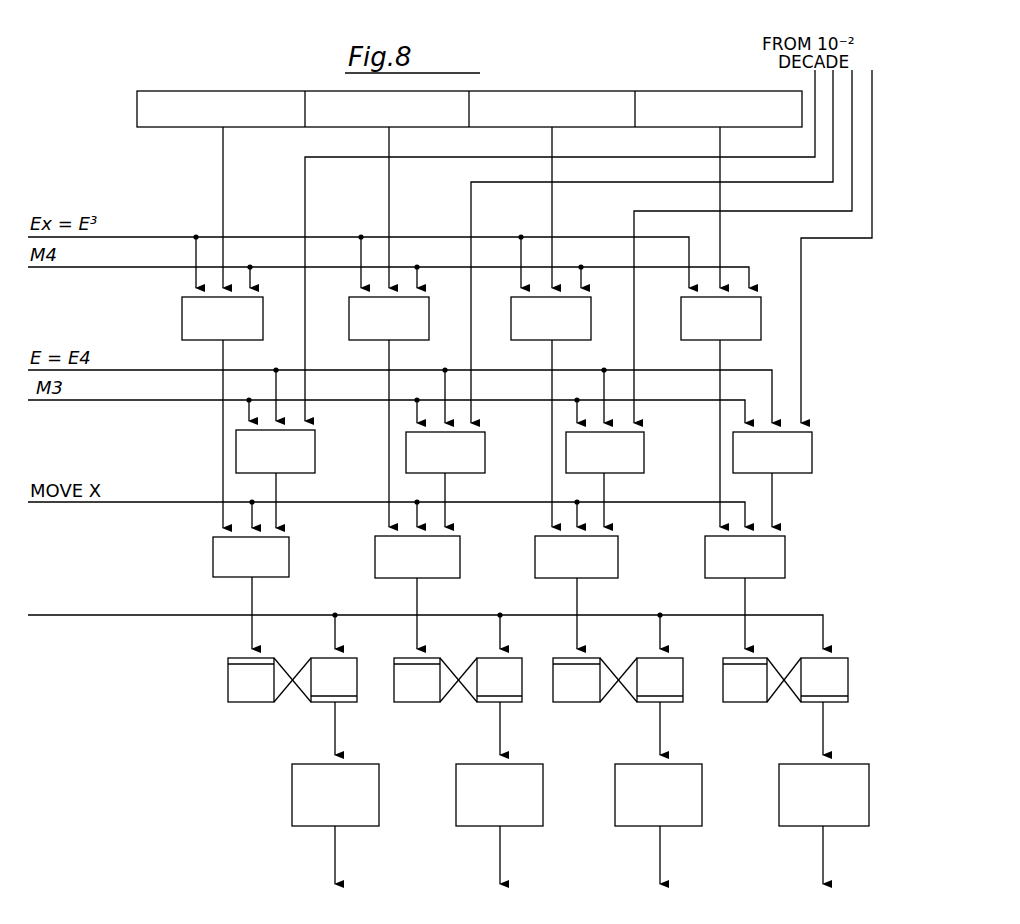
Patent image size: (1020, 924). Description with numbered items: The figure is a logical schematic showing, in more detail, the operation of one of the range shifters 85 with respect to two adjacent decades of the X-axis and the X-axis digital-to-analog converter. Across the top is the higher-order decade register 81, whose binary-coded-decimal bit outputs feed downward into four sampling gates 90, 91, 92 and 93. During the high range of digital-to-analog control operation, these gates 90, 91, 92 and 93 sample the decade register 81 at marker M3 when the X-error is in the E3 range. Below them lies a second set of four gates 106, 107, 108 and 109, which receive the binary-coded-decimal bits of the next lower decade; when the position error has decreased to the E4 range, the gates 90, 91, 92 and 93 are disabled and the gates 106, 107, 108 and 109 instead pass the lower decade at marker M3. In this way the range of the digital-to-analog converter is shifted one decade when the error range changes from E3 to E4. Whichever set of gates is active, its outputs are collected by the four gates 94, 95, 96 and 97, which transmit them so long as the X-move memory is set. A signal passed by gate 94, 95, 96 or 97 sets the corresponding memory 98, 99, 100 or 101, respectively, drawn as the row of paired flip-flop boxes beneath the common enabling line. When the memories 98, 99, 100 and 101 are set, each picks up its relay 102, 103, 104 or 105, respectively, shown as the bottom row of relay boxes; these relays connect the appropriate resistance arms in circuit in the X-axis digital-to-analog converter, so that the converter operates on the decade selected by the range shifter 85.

The decade register 81 is at (255, 91).
The range shifter 85 is at (163, 660).
The gate 90 is at (182, 316).
The gate 91 is at (349, 307).
The gate 92 is at (511, 307).
The gate 93 is at (681, 311).
The gate 94 is at (213, 566).
The gate 95 is at (375, 562).
The gate 96 is at (535, 550).
The gate 97 is at (705, 550).
The memory 98 is at (228, 697).
The memory 99 is at (418, 704).
The memory 100 is at (588, 704).
The memory 101 is at (748, 704).
The relay 102 is at (292, 812).
The relay 103 is at (456, 812).
The relay 104 is at (615, 806).
The relay 105 is at (779, 804).
The gate 106 is at (315, 445).
The gate 107 is at (485, 452).
The gate 108 is at (644, 452).
The gate 109 is at (812, 449).